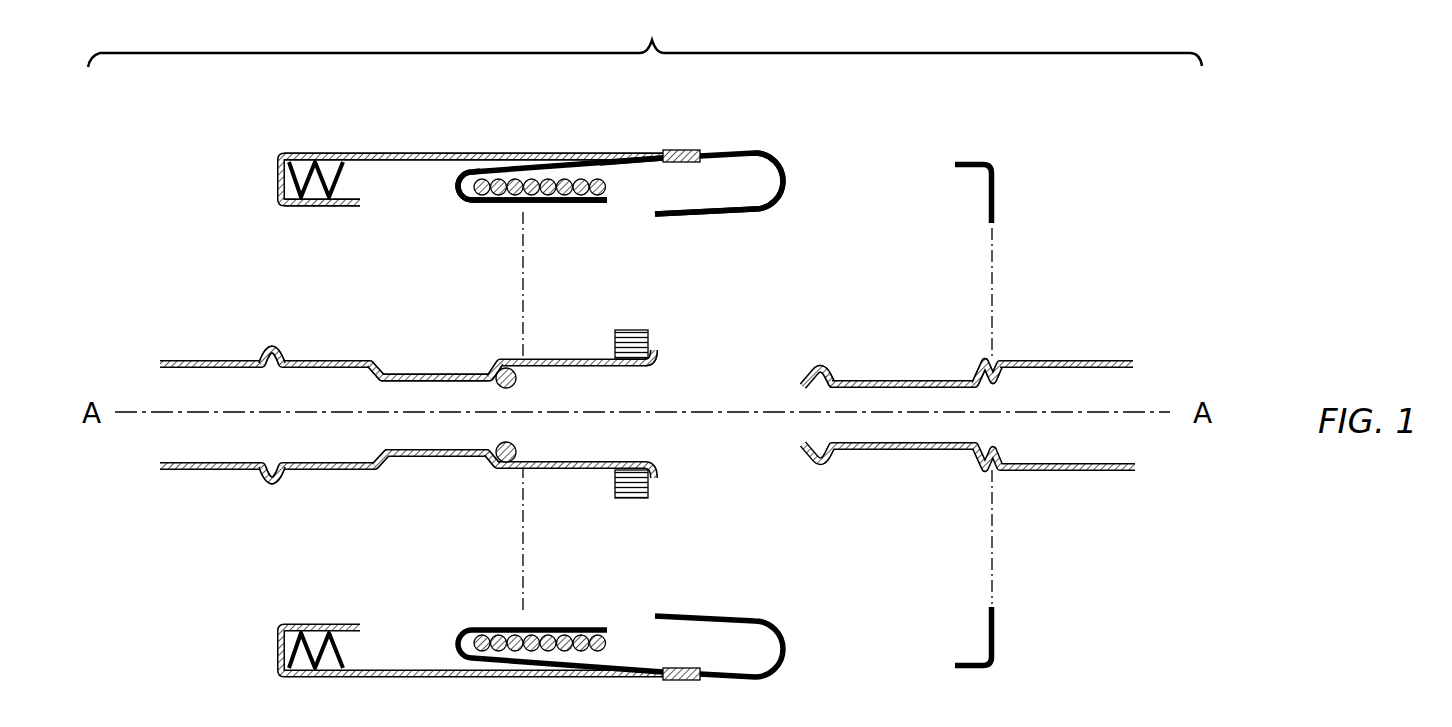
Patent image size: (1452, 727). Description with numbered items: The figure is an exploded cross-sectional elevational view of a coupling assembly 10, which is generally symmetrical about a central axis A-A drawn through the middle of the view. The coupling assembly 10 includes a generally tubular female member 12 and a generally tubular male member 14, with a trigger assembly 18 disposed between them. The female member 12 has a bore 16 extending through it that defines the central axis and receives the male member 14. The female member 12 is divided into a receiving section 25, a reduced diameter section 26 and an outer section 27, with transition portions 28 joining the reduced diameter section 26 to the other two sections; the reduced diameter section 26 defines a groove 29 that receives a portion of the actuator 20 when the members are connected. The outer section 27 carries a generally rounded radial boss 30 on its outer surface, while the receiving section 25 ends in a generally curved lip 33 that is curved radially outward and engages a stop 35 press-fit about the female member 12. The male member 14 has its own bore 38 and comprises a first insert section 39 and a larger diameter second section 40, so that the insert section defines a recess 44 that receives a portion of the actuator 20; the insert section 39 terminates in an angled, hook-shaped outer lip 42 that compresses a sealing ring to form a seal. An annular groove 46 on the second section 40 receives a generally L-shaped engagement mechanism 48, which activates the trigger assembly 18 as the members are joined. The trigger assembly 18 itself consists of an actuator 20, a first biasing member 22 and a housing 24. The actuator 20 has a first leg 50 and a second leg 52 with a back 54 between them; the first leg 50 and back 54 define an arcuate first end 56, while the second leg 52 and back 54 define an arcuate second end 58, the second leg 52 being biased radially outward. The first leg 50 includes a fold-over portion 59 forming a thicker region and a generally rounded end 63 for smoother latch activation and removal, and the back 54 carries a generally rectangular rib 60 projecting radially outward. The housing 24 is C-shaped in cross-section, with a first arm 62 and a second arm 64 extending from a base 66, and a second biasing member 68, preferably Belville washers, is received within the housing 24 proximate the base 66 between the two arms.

The coupling assembly 10 is at (645, 36).
The female member 12 is at (385, 492).
The male member 14 is at (1112, 480).
The bore 16 is at (395, 322).
The trigger assembly 18 is at (521, 172).
The actuator 20 is at (629, 177).
The first biasing member 22 is at (606, 187).
The housing 24 is at (428, 172).
The receiving section 25 is at (546, 478).
The reduced diameter section 26 is at (440, 464).
The outer section 27 is at (323, 482).
The transition portions 28 is at (492, 362).
The groove 29 is at (434, 370).
The radial boss 30 is at (270, 345).
The lip 33 is at (656, 352).
The stop 35 is at (620, 333).
The bore 38 is at (993, 332).
The first insert section 39 is at (846, 374).
The second section 40 is at (1060, 357).
The outer lip 42 is at (811, 376).
The recess 44 is at (892, 378).
The annular groove 46 is at (996, 382).
The engagement mechanism 48 is at (990, 162).
The first leg 50 is at (502, 204).
The second leg 52 is at (706, 213).
The back 54 is at (650, 162).
The first end 56 is at (462, 186).
The second end 58 is at (785, 182).
The fold-over portion 59 is at (582, 204).
The rib 60 is at (678, 150).
The first arm 62 is at (462, 150).
The end 63 is at (608, 205).
The second arm 64 is at (320, 208).
The base 66 is at (283, 180).
The second biasing member 68 is at (338, 178).